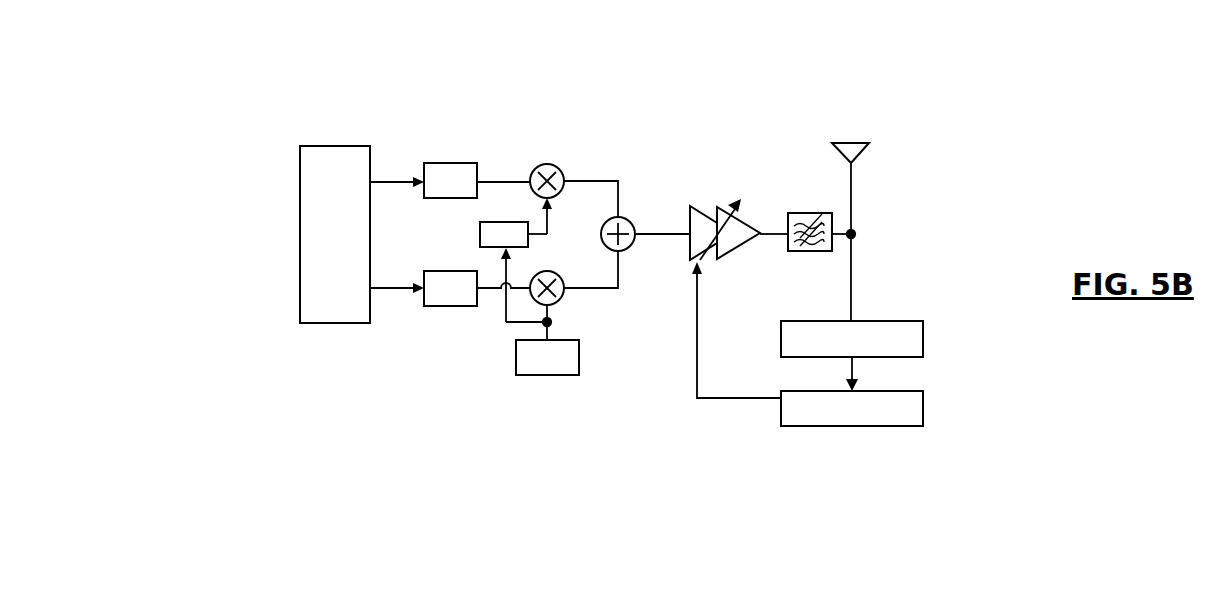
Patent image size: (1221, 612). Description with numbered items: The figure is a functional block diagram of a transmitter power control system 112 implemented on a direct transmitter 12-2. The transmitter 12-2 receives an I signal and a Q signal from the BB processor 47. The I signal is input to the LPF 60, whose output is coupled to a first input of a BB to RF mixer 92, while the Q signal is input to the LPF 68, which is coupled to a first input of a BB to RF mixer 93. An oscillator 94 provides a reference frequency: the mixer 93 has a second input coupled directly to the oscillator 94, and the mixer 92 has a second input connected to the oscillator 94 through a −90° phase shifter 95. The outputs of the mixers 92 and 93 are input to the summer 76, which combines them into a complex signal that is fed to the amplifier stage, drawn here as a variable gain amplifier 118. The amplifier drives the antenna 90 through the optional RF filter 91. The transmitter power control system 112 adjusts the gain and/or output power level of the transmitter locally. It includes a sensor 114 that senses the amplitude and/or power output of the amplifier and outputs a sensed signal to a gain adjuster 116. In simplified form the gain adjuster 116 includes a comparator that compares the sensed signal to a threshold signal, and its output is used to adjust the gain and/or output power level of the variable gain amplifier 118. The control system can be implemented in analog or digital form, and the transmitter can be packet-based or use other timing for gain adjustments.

The direct transmitter 12-2 is at (393, 90).
The BB processor 47 is at (350, 145).
The LPF 60 is at (452, 163).
The LPF 68 is at (452, 306).
The BB to RF mixer 92 is at (560, 167).
The BB to RF mixer 93 is at (561, 300).
The −90° phase shifter 95 is at (479, 234).
The oscillator 94 is at (553, 377).
The summer 76 is at (626, 218).
The variable gain amplifier 118 is at (745, 218).
The RF filter 91 is at (803, 253).
The antenna 90 is at (858, 152).
The transmitter power control system 112 is at (958, 280).
The sensor 114 is at (925, 339).
The gain adjuster 116 is at (925, 410).